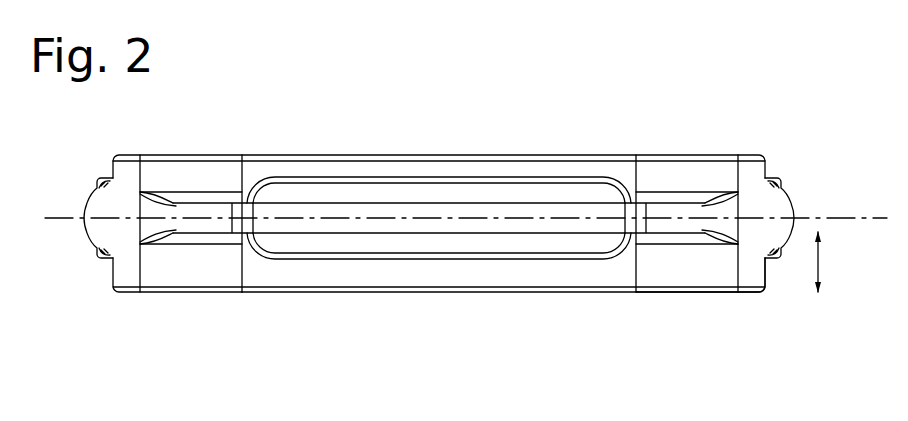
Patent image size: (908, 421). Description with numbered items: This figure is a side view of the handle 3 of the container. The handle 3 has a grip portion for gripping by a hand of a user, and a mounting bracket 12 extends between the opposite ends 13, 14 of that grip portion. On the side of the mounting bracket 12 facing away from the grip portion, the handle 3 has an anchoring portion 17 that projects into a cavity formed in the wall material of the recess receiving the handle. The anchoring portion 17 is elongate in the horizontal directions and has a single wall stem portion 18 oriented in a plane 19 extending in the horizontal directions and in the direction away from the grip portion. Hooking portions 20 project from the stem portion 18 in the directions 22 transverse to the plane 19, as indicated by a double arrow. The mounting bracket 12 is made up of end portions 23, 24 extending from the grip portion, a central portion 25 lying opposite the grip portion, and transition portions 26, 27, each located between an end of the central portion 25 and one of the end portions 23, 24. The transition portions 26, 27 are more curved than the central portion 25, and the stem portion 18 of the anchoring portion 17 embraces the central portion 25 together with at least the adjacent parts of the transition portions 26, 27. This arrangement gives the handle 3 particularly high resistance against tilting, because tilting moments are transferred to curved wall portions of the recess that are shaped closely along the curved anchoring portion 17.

The handle 3 is at (438, 218).
The mounting bracket 12 is at (584, 147).
The end of the grip portion 13 is at (95, 212).
The end of the grip portion 14 is at (787, 208).
The anchoring portion 17 is at (500, 180).
The stem portion 18 is at (229, 195).
The plane 19 is at (868, 218).
The hooking portions 20 is at (362, 188).
The directions transverse to the plane 22 is at (819, 263).
The end portion of the mounting bracket 23 is at (168, 267).
The end portion of the mounting bracket 24 is at (755, 272).
The central portion 25 is at (442, 168).
The transition portion 26 is at (177, 178).
The transition portion 27 is at (660, 175).